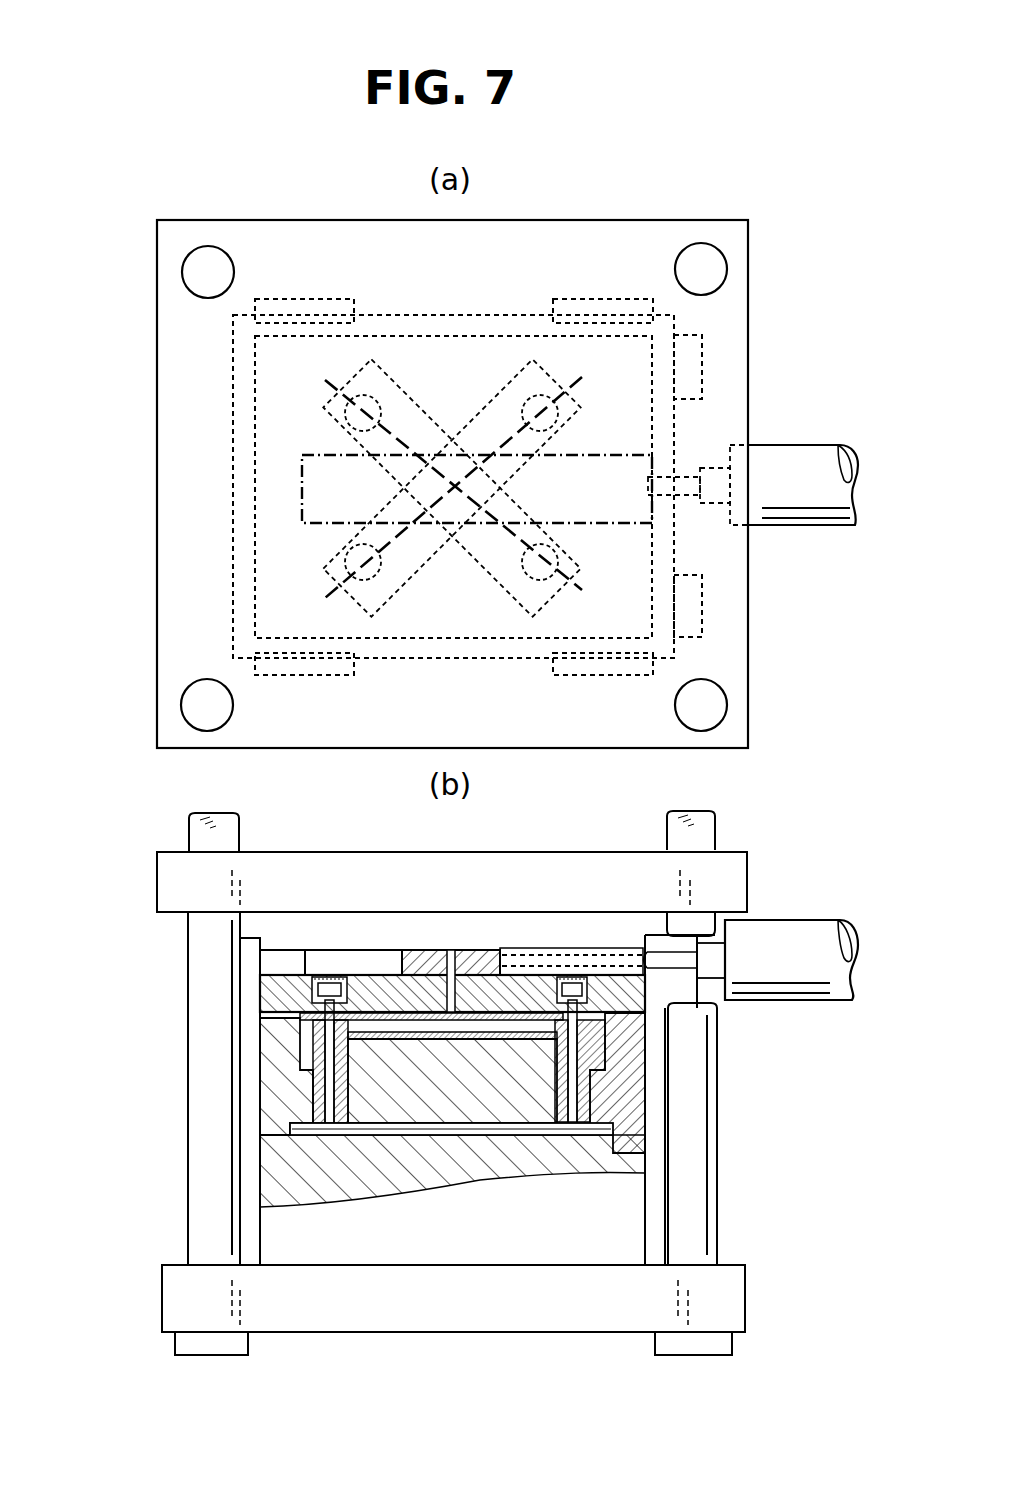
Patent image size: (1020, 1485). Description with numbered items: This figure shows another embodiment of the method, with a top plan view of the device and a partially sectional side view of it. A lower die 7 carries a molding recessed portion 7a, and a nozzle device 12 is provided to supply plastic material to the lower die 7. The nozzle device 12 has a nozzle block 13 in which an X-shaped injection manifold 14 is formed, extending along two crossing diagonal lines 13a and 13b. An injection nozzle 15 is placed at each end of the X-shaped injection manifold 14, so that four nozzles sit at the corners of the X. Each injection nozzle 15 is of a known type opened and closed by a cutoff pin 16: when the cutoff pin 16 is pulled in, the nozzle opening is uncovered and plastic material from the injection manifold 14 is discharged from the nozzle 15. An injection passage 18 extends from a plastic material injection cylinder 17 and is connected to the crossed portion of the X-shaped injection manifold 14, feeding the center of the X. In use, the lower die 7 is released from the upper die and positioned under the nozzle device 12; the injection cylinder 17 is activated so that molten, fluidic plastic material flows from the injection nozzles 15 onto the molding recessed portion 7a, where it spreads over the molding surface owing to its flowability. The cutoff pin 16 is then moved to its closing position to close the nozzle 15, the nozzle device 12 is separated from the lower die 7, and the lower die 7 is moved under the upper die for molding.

The lower die 7 is at (233, 455).
The molding recessed portion 7a is at (478, 1138).
The nozzle device 12 is at (244, 385).
The nozzle block 13 is at (253, 573).
The diagonal line 13a is at (390, 542).
The diagonal line 13b is at (397, 442).
The X-shaped injection manifold 14 is at (387, 350).
The injection nozzle 15 is at (560, 412).
The cutoff pin 16 is at (597, 1058).
The plastic material injection cylinder 17 is at (803, 455).
The injection passage 18 is at (451, 950).